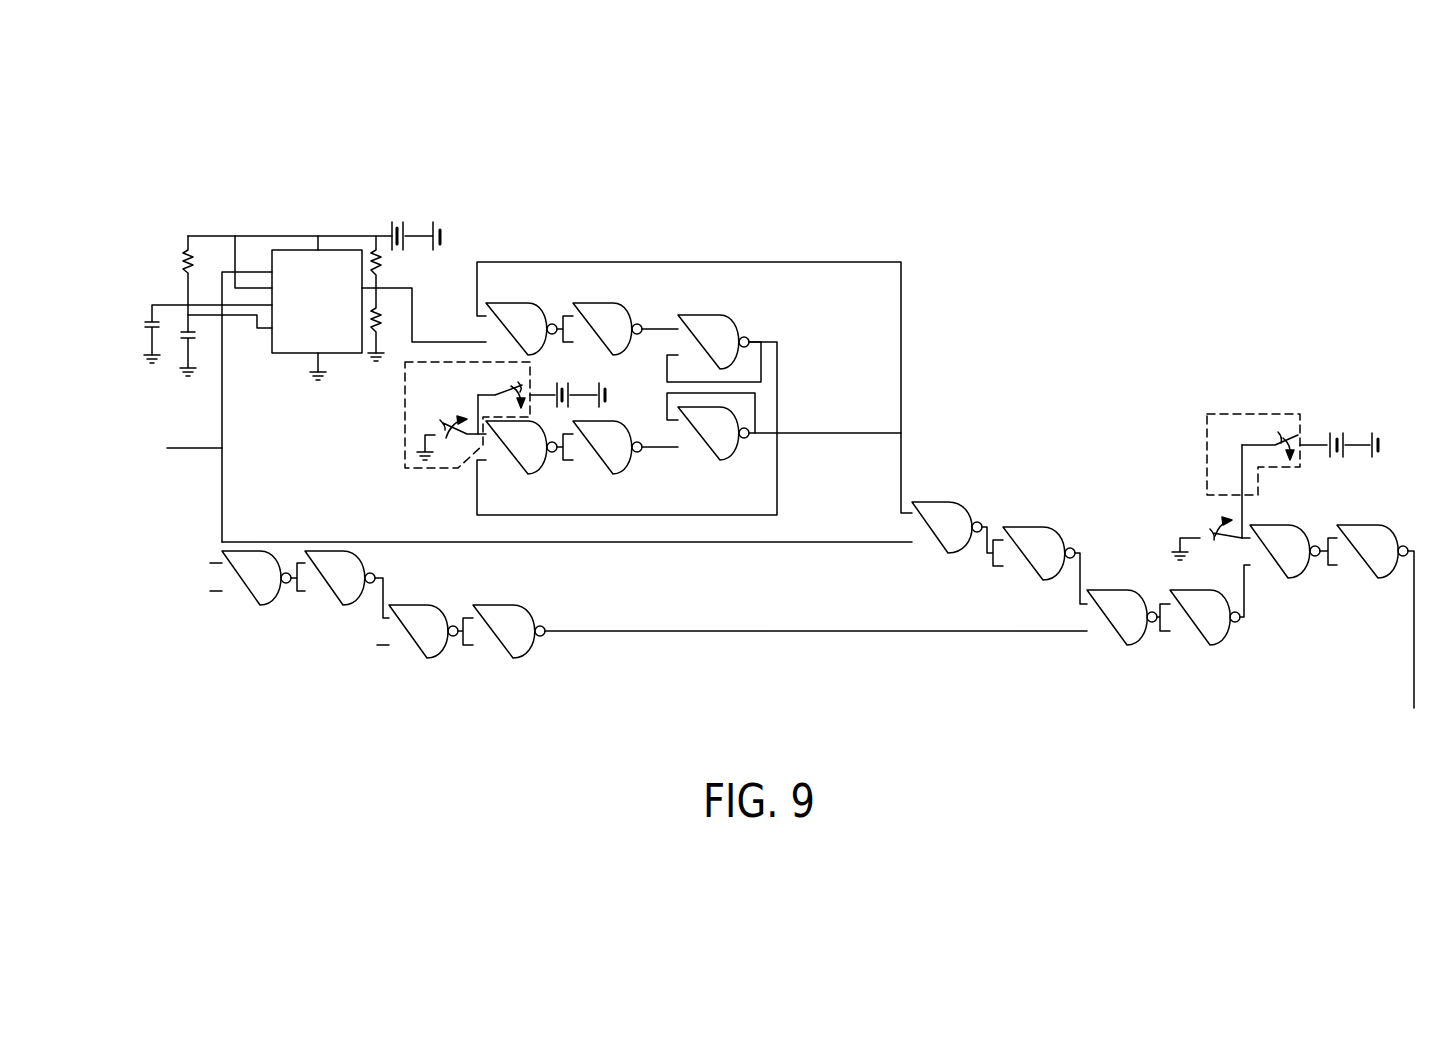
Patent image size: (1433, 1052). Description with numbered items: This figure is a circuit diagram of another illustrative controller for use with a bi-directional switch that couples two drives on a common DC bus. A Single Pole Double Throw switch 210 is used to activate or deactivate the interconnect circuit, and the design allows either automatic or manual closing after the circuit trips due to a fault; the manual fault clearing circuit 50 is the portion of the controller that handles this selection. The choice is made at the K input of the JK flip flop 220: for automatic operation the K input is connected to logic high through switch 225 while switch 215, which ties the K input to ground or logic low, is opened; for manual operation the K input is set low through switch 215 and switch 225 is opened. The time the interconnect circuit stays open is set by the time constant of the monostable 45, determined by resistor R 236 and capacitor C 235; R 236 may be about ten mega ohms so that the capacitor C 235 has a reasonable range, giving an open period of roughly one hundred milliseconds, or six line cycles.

The JK flip flop 220 is at (992, 215).
The monostable 45 is at (278, 354).
The resistor R 236 is at (183, 258).
The capacitor C 235 is at (172, 346).
The manual fault clearing circuit 50 is at (690, 262).
The switch 225 is at (517, 388).
The switch 215 is at (462, 438).
The Single Pole Double Throw (SPDT) switch 210 is at (1233, 413).